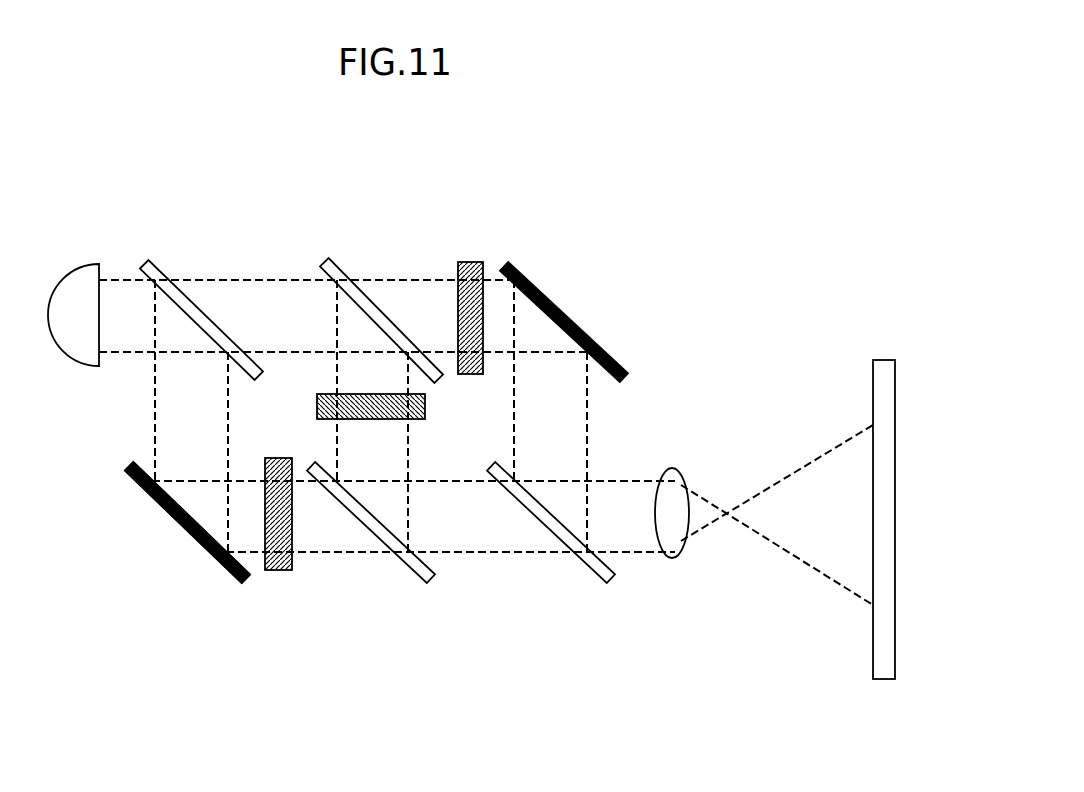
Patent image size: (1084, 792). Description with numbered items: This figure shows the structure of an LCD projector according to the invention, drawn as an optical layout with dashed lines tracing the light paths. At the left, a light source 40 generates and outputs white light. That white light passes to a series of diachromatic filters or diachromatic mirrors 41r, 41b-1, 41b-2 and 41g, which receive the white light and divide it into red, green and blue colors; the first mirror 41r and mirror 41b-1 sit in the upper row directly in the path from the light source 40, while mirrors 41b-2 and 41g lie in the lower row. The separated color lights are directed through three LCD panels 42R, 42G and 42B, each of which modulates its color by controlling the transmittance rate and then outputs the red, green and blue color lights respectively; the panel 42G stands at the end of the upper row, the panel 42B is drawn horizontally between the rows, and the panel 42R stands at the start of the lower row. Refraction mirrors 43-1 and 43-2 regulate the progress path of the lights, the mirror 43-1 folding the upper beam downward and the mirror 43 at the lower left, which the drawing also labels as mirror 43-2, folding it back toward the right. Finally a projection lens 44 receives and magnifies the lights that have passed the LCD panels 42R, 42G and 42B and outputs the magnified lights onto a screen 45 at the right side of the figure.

The light source 40 is at (72, 280).
The diachromatic mirror 41r is at (158, 268).
The diachromatic mirror 41b-1 is at (333, 267).
The LCD panel 42G is at (472, 262).
The refraction mirror 43-1 is at (567, 317).
The LCD panel 42B is at (425, 410).
The refraction mirror 43 is at (182, 525).
The refraction mirror 43-2 is at (187, 552).
The LCD panel 42R is at (275, 570).
The diachromatic mirror 41b-2 is at (412, 573).
The diachromatic mirror 41g is at (587, 570).
The projection lens 44 is at (672, 558).
The screen 45 is at (895, 617).